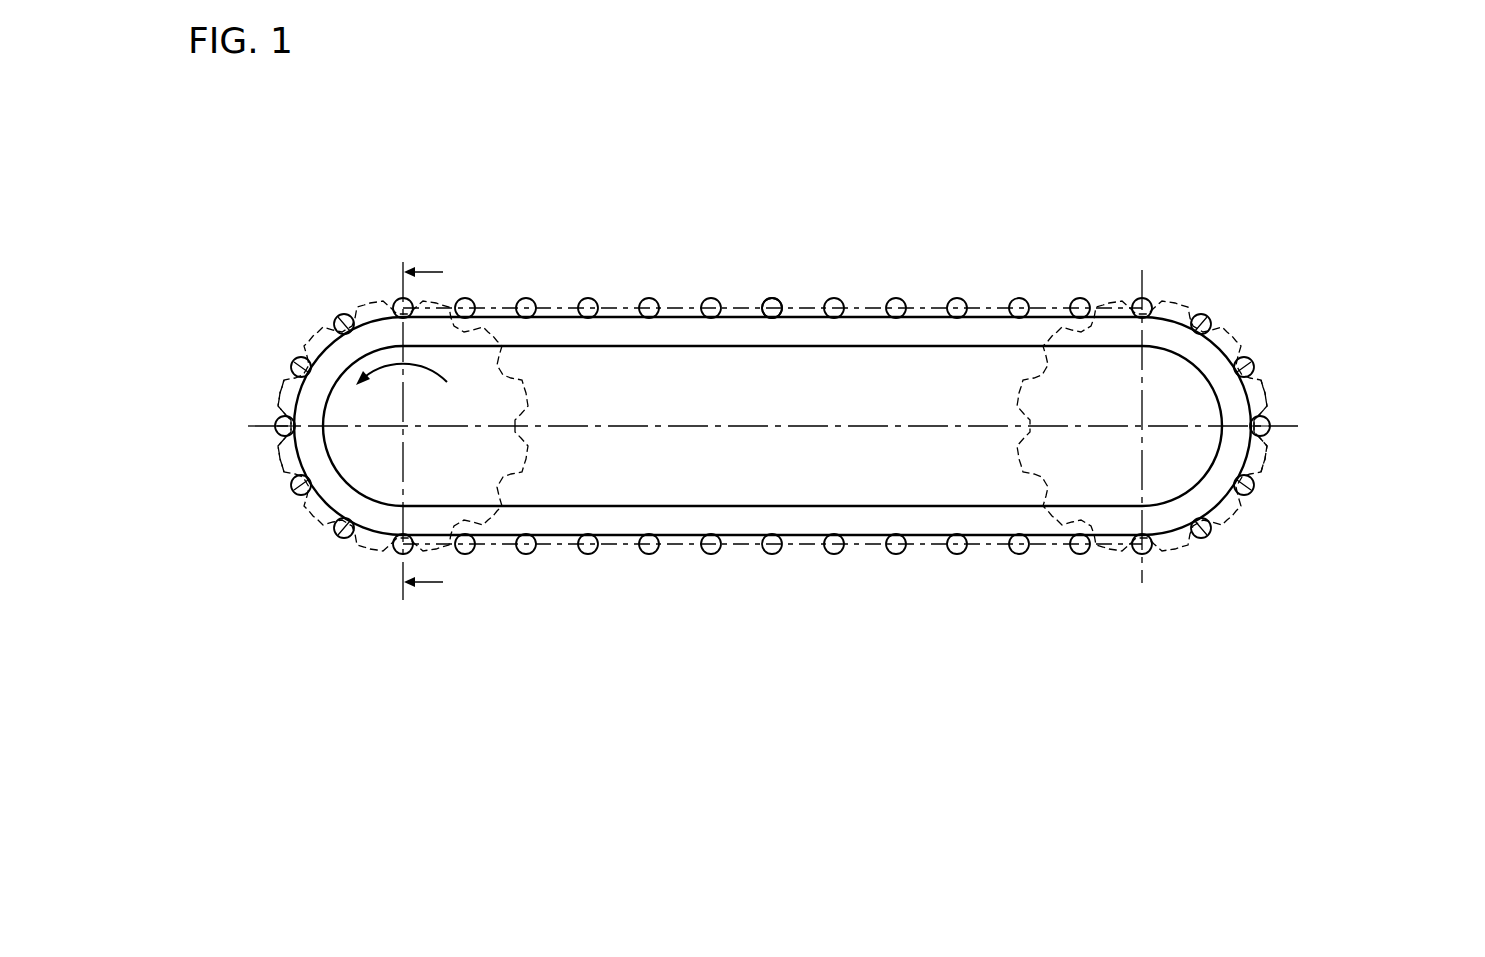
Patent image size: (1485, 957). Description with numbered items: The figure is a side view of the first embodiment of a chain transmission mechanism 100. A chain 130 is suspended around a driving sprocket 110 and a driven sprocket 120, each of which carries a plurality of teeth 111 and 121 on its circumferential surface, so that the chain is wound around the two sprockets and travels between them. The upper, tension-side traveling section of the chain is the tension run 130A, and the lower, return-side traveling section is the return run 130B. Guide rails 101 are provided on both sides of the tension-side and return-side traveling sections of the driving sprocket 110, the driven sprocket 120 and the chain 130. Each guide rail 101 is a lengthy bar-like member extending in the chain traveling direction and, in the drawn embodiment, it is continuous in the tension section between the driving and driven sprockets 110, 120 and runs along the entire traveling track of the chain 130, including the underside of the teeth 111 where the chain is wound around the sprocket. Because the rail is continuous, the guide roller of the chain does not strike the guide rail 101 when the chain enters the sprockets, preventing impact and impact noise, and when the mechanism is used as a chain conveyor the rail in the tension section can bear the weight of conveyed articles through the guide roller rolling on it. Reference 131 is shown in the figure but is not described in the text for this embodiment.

The chain transmission mechanism 100 is at (491, 155).
The guide rail 101 is at (375, 340).
The driving sprocket 110 is at (345, 407).
The teeth of the driving sprocket 111 is at (288, 457).
The driven sprocket 120 is at (1167, 375).
The teeth of the driven sprocket 121 is at (1300, 374).
The chain 130 is at (983, 308).
The tension run of the chain 130A is at (683, 308).
The return run of the chain 130B is at (732, 547).
The roller 131 is at (767, 305).